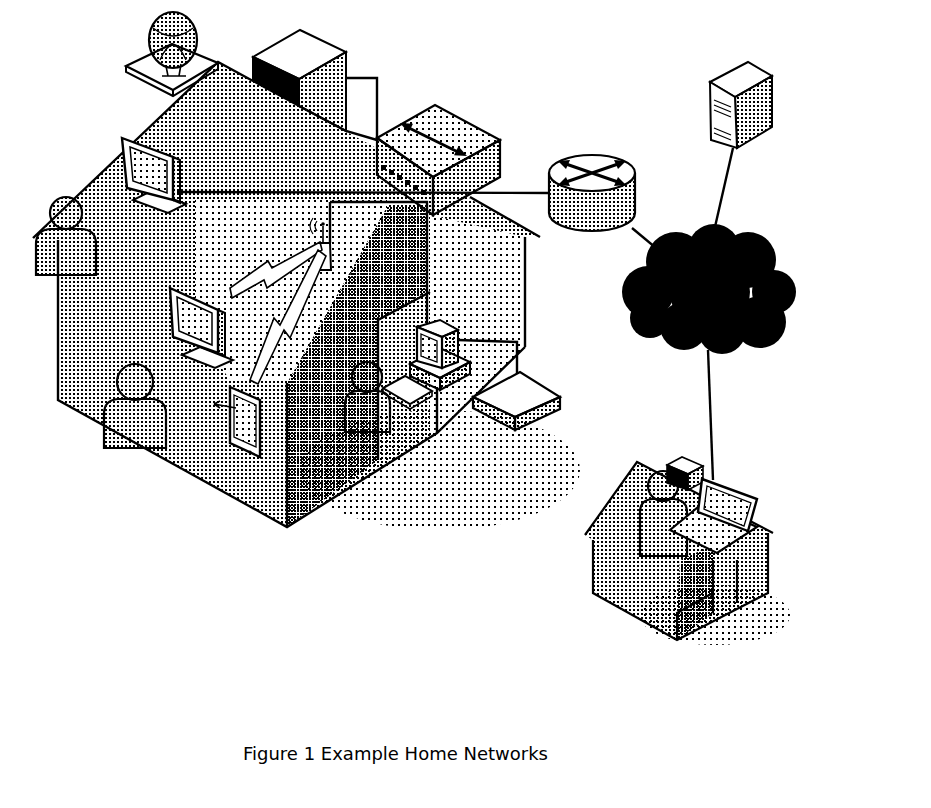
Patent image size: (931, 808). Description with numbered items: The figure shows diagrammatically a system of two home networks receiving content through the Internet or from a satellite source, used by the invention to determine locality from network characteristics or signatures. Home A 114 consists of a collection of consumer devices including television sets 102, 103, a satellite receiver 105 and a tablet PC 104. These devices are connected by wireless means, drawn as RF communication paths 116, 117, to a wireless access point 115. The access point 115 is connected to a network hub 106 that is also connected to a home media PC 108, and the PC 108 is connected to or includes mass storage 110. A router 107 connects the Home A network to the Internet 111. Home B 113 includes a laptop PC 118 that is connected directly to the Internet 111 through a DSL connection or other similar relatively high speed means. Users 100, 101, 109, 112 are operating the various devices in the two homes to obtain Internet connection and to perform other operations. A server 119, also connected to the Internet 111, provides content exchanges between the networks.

The user 100 is at (135, 417).
The user 101 is at (66, 247).
The television set 102 is at (154, 189).
The television set 103 is at (201, 340).
The tablet PC 104 is at (237, 432).
The satellite receiver 105 is at (172, 62).
The network hub 106 is at (363, 201).
The router 107 is at (608, 206).
The home media PC 108 is at (429, 358).
The user 109 is at (366, 405).
The mass storage 110 is at (509, 396).
The Internet 111 is at (709, 289).
The user 112 is at (663, 551).
The Home B 113 is at (687, 560).
The Home A 114 is at (306, 289).
The wireless access point 115 is at (310, 236).
The RF communication path 116 is at (288, 317).
The RF communication path 117 is at (276, 278).
The laptop PC 118 is at (718, 451).
The server 119 is at (724, 151).